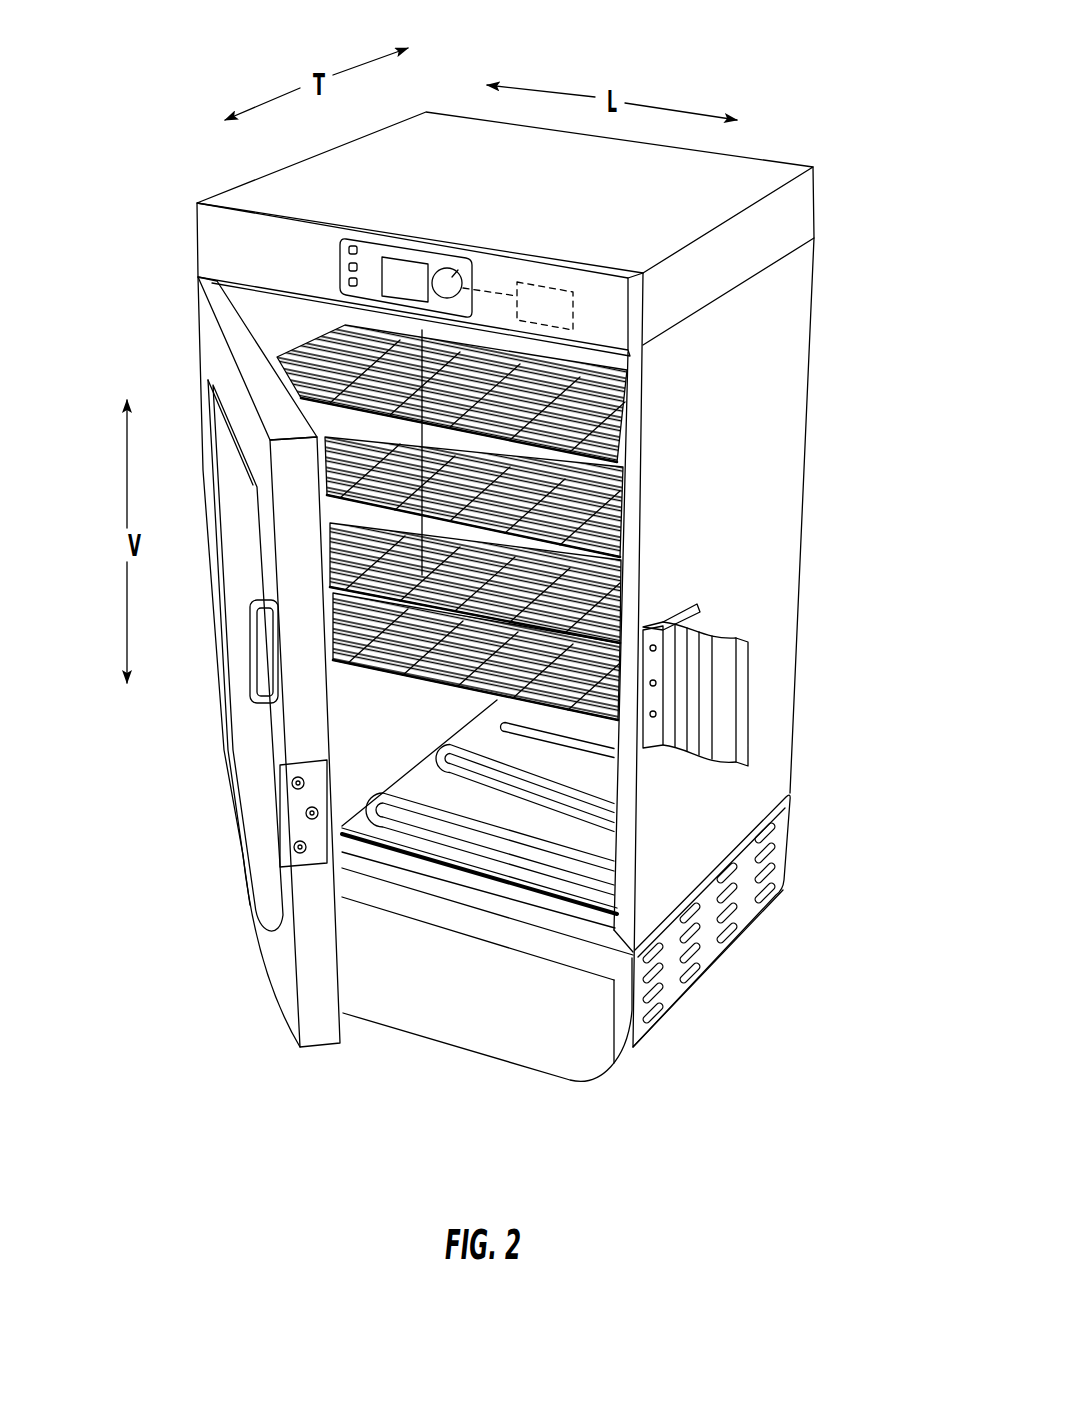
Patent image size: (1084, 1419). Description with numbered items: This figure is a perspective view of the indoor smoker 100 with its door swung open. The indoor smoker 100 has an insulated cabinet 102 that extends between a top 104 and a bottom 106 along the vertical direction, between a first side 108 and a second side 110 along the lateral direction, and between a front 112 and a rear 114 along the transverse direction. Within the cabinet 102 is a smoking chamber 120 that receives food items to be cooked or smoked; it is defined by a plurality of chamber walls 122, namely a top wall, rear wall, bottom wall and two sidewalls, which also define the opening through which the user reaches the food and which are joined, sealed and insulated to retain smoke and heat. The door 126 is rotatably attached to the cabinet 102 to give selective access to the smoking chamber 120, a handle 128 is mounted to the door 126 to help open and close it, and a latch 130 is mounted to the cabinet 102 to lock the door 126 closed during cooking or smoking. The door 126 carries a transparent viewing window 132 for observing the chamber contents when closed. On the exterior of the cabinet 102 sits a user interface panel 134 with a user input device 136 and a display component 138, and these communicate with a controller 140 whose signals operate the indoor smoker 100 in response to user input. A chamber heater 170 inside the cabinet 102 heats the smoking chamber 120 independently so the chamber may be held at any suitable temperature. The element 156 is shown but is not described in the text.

The indoor smoker 100 is at (815, 52).
The insulated cabinet 102 is at (777, 378).
The top 104 is at (738, 172).
The bottom 106 is at (512, 1063).
The first side 108 is at (200, 247).
The second side 110 is at (793, 540).
The front 112 is at (243, 242).
The rear 114 is at (817, 280).
The smoking chamber 120 is at (398, 727).
The chamber walls 122 is at (277, 320).
The door 126 is at (237, 328).
The handle 128 is at (252, 633).
The latch 130 is at (740, 665).
The transparent viewing window 132 is at (272, 798).
The user interface panel 134 is at (425, 233).
The user input device 136 is at (357, 250).
The display component 138 is at (413, 278).
The controller 140 is at (547, 293).
The view reference 156 is at (159, 108).
The chamber heater 170 is at (547, 868).